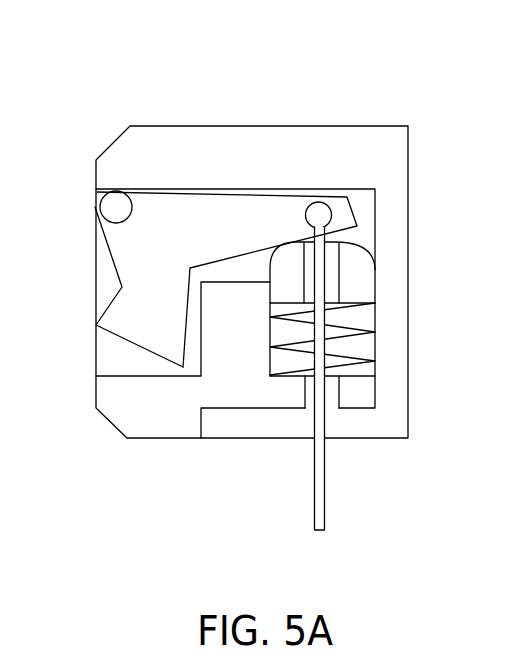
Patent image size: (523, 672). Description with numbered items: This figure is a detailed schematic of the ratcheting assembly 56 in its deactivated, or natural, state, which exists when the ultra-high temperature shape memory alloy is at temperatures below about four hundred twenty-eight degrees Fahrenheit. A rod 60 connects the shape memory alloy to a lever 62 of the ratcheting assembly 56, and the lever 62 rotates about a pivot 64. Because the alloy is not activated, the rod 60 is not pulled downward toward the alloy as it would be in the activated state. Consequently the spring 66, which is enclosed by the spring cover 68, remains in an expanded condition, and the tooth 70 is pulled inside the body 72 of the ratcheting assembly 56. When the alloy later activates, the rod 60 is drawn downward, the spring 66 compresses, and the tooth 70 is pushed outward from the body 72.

The ratcheting assembly 56 is at (243, 272).
The rod 60 is at (327, 497).
The lever 62 is at (123, 234).
The pivot 64 is at (109, 203).
The spring 66 is at (364, 324).
The spring cover 68 is at (367, 270).
The tooth 70 is at (88, 324).
The body 72 is at (397, 147).